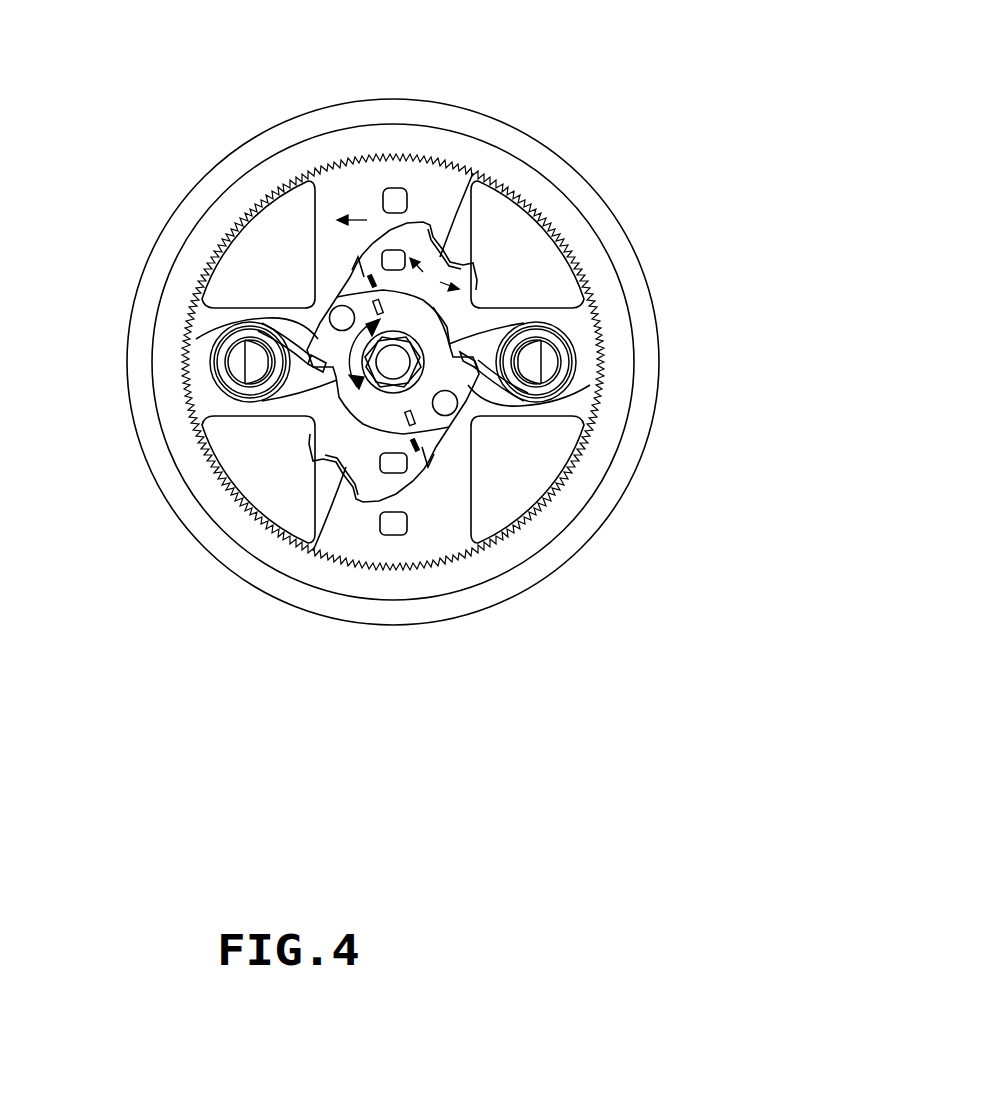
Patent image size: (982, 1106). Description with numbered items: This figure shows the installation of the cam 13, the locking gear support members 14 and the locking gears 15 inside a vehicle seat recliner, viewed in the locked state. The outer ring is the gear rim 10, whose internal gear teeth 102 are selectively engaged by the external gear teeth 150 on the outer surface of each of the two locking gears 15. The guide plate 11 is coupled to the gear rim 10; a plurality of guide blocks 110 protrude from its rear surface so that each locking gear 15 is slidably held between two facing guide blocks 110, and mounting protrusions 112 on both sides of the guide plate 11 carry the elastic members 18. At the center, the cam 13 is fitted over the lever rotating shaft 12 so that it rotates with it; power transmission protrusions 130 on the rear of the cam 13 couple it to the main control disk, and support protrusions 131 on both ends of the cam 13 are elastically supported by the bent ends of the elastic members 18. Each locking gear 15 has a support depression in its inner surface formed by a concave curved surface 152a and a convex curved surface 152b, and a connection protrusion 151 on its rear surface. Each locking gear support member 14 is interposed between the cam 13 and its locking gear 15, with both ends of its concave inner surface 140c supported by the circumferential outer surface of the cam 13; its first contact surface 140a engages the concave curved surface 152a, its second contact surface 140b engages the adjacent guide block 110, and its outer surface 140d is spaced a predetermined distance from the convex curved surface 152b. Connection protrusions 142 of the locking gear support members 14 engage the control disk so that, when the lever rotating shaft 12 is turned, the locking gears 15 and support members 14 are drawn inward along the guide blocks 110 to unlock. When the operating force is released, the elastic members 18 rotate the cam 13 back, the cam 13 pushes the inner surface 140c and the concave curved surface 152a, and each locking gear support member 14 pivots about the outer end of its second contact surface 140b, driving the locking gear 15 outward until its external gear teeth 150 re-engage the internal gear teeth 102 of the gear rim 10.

The gear rim 10 is at (598, 278).
The guide plate 11 is at (212, 325).
The internal gear teeth 102 is at (608, 365).
The guide blocks 110 is at (250, 247).
The external gear teeth 150 is at (330, 190).
The concave curved surface 152a is at (362, 257).
The convex curved surface 152b is at (430, 245).
The first contact surface 140a is at (368, 250).
The second contact surface 140b is at (477, 288).
The inner surface 140c is at (590, 312).
The outer surface 140d is at (437, 260).
The connection protrusion 151 is at (401, 203).
The connection protrusions 142 is at (343, 400).
The power transmission protrusions 130 is at (446, 416).
The support protrusions 131 is at (467, 392).
The elastic members 18 is at (215, 352).
The mounting protrusions 112 is at (258, 365).
The locking gear support members 14 is at (522, 188).
The cam 13 is at (327, 432).
The lever rotating shaft 12 is at (337, 387).
The locking gears 15 is at (327, 185).